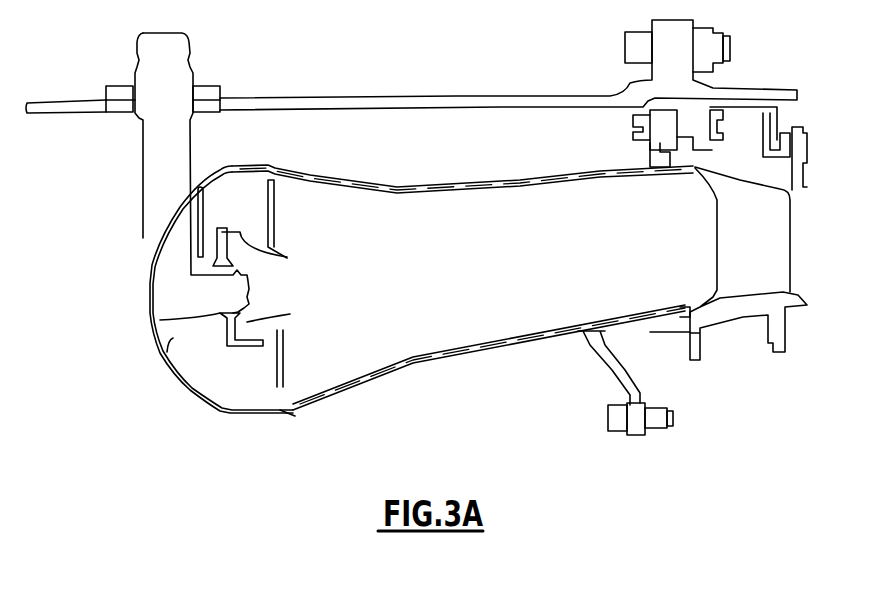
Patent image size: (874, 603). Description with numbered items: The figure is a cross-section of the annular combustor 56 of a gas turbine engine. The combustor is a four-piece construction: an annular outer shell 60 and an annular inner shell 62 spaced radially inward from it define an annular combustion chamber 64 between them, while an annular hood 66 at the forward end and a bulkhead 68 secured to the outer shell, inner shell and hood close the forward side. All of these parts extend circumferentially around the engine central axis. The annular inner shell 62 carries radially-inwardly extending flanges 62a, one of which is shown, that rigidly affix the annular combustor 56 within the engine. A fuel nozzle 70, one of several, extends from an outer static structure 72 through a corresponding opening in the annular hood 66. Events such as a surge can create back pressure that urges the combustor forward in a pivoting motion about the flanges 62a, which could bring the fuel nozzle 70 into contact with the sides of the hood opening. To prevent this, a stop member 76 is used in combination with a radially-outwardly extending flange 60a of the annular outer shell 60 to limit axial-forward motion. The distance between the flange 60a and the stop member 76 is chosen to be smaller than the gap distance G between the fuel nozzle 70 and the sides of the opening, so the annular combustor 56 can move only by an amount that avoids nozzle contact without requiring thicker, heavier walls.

The annular combustor 56 is at (337, 420).
The annular outer shell 60 is at (486, 166).
The radially-outwardly extending flange 60a is at (667, 168).
The annular inner shell 62 is at (507, 365).
The radially-inwardly extending flange 62a is at (603, 367).
The annular combustion chamber 64 is at (468, 284).
The annular hood 66 is at (170, 388).
The bulkhead 68 is at (254, 201).
The fuel nozzle 70 is at (143, 177).
The outer static structure 72 is at (458, 88).
The stop member 76 is at (638, 152).
The gap distance G is at (138, 228).